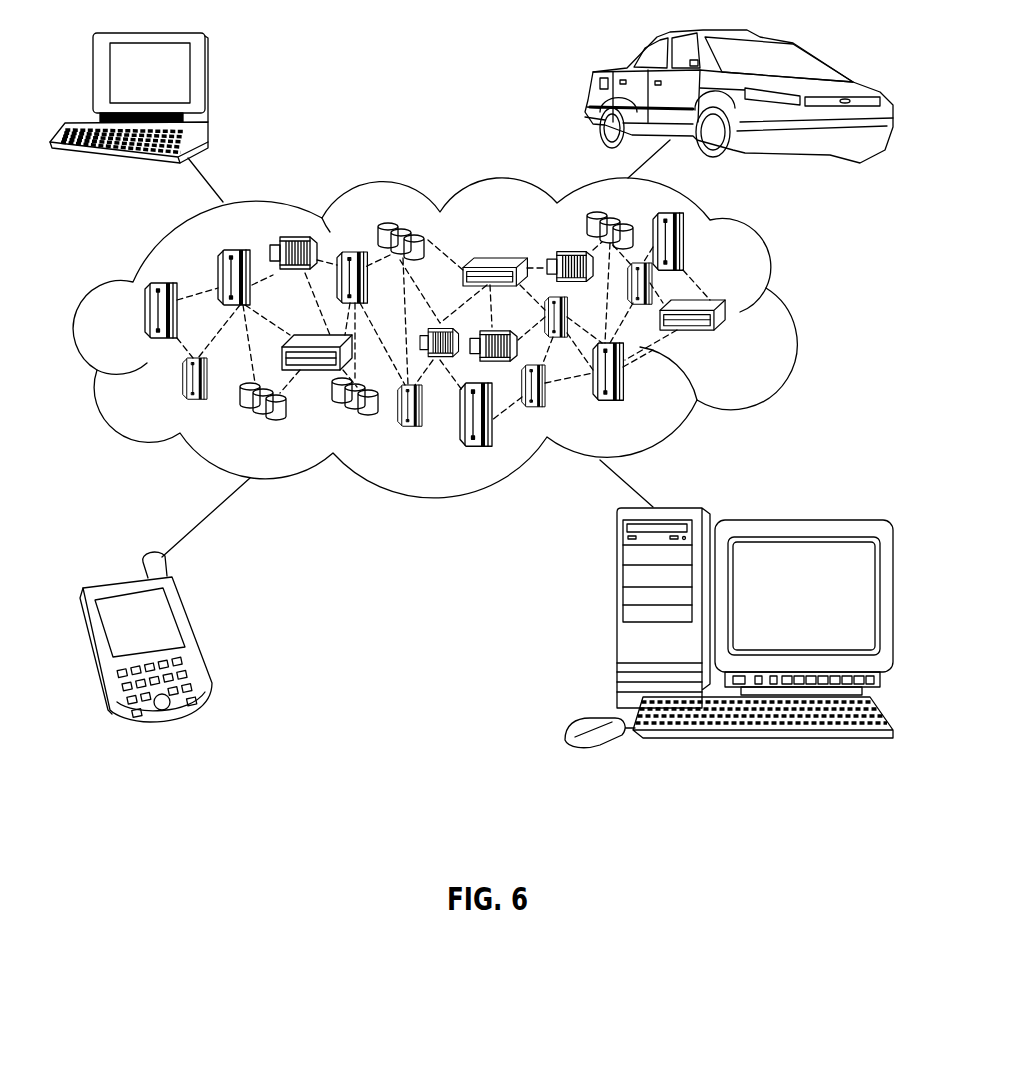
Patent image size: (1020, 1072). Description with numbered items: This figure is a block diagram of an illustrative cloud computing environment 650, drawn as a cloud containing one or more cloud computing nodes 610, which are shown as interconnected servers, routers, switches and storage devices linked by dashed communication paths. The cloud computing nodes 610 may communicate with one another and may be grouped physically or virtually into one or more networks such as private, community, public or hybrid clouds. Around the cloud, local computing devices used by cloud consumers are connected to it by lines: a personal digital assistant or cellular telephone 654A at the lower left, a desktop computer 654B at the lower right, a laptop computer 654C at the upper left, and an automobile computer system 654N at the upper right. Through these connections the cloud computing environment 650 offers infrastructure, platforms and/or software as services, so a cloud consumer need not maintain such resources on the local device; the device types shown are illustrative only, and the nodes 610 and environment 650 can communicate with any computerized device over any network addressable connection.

The laptop computer 654C is at (208, 80).
The automobile computer system 654N is at (592, 88).
The cloud computing environment 650 is at (770, 277).
The cloud computing nodes 610 is at (747, 337).
The personal digital assistant (PDA) or cellular telephone 654A is at (193, 634).
The desktop computer 654B is at (616, 618).